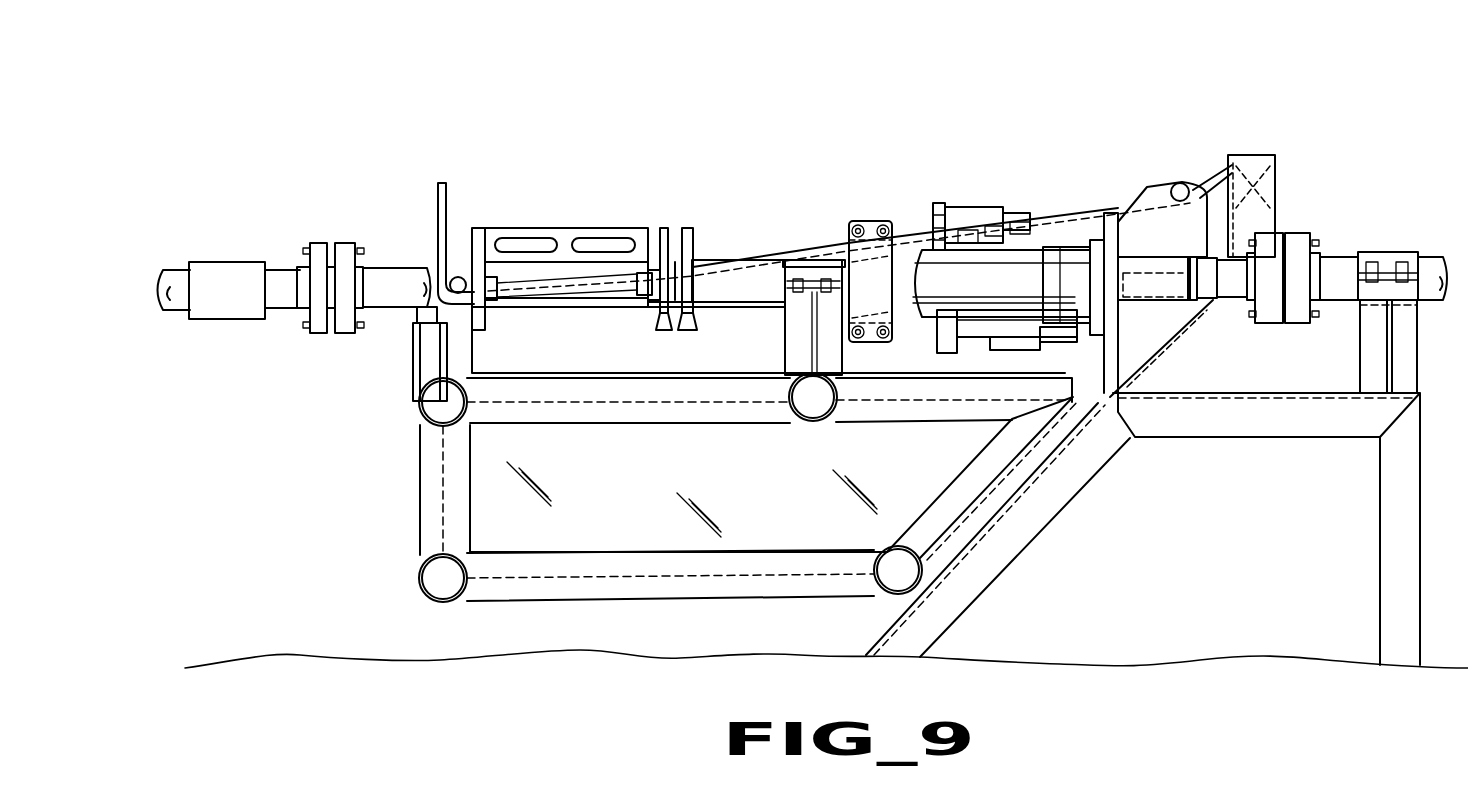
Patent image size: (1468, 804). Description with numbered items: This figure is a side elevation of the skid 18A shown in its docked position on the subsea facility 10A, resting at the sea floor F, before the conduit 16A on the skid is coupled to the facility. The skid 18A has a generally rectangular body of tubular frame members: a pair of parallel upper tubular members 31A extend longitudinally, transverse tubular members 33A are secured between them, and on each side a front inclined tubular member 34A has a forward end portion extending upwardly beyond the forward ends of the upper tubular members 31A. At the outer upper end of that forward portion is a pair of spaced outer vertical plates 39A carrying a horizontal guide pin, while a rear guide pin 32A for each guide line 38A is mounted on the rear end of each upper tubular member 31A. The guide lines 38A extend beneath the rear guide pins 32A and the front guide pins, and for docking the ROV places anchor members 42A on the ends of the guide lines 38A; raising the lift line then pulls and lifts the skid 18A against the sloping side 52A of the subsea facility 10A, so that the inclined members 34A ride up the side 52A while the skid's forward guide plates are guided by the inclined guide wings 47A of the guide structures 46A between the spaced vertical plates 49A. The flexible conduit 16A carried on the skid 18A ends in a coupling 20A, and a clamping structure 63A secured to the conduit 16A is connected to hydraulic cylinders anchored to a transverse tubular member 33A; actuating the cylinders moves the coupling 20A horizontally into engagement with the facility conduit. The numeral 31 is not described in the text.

The subsea facility 10A is at (1379, 113).
The conduit 16A is at (398, 310).
The skid 18A is at (860, 170).
The coupling 20A is at (1092, 271).
The frame 31 is at (1097, 372).
The upper tubular members 31A is at (545, 374).
The rear guide pin 32A is at (455, 277).
The transverse tubular members 33A is at (418, 382).
The front inclined tubular member 34A is at (971, 462).
The guide lines 38A is at (447, 199).
The outer vertical plates 39A is at (1163, 184).
The anchor members 42A is at (1282, 170).
The guide structures 46A is at (1214, 152).
The inclined guide wings 47A is at (1140, 342).
The vertical plates 49A is at (1261, 222).
The sloping side 52A is at (893, 624).
The clamping structure 63A is at (695, 234).
The sea floor F is at (340, 654).